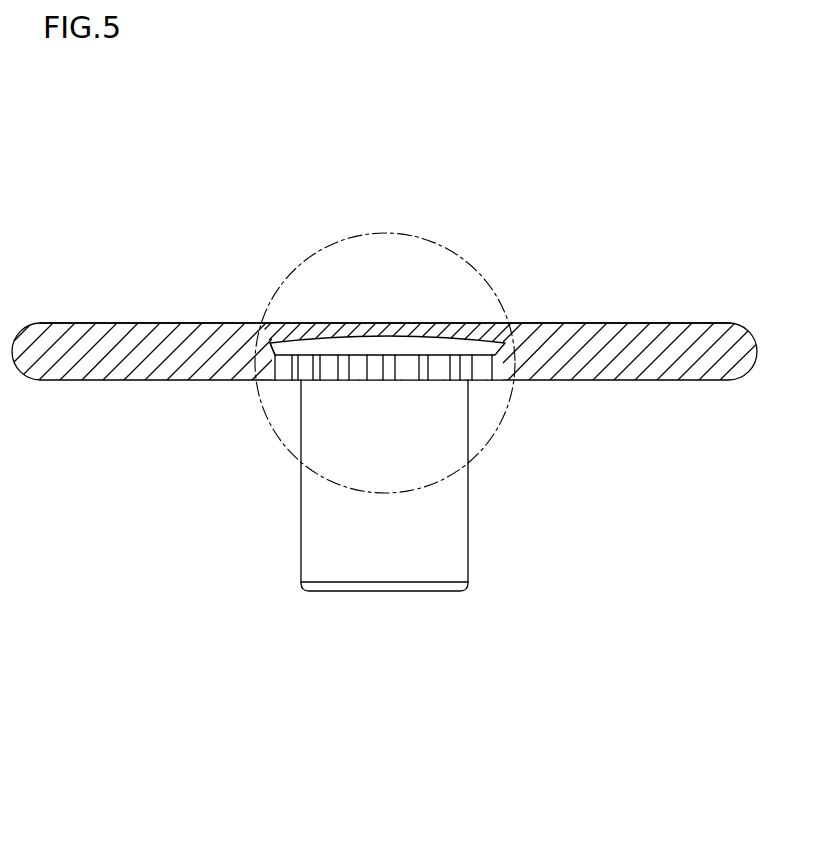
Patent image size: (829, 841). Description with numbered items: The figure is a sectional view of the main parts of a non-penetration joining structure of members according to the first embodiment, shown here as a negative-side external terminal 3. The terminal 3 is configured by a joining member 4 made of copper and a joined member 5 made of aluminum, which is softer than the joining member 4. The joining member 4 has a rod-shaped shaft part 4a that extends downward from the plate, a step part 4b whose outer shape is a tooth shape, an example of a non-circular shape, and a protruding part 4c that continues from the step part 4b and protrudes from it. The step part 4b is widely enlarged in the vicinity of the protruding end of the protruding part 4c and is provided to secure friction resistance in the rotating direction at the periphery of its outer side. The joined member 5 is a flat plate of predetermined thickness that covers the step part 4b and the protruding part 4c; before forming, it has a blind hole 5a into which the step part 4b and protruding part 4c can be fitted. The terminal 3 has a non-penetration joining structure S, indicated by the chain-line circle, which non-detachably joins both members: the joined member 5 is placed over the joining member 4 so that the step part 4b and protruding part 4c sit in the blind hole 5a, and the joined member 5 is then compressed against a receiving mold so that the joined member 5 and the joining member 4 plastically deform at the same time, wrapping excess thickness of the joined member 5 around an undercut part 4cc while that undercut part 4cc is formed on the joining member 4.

The negative-side external terminal 3 is at (399, 438).
The joining member 4 is at (474, 455).
The shaft part 4a is at (405, 558).
The step part 4b is at (393, 367).
The protruding part 4c is at (382, 347).
The undercut part 4cc is at (268, 341).
The joined member 5 is at (197, 343).
The blind hole 5a is at (118, 358).
The non-penetration joining structure S is at (385, 318).